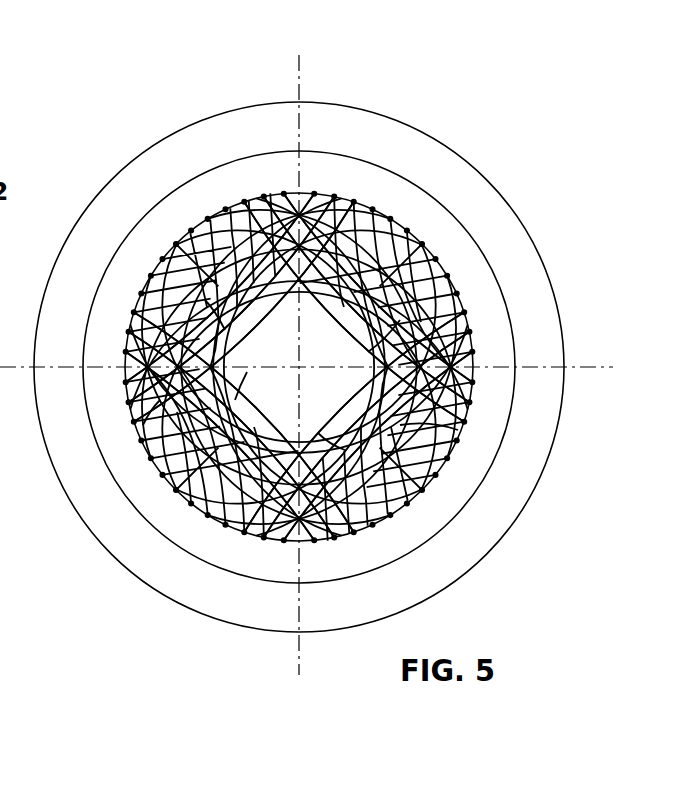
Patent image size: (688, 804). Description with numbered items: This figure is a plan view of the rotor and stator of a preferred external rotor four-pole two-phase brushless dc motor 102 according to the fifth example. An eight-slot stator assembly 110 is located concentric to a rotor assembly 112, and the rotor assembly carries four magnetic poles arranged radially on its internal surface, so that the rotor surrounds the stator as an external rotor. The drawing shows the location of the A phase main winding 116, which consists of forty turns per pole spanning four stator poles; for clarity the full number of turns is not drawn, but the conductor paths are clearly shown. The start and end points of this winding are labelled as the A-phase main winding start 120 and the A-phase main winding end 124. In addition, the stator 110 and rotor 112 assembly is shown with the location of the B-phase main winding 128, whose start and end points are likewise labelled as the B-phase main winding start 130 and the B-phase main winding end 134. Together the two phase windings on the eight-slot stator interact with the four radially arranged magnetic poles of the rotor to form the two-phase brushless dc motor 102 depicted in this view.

The external rotor 4-pole 2-phase brushless dc motor 102 is at (166, 119).
The stator assembly 110 is at (378, 212).
The rotor assembly 112 is at (542, 263).
The A phase main winding 116 is at (458, 430).
The A-phase main winding start 120 is at (371, 352).
The A-phase main winding end 124 is at (318, 433).
The B-phase main winding 128 is at (143, 425).
The B-phase main winding start 130 is at (223, 328).
The B-phase main winding end 134 is at (246, 370).